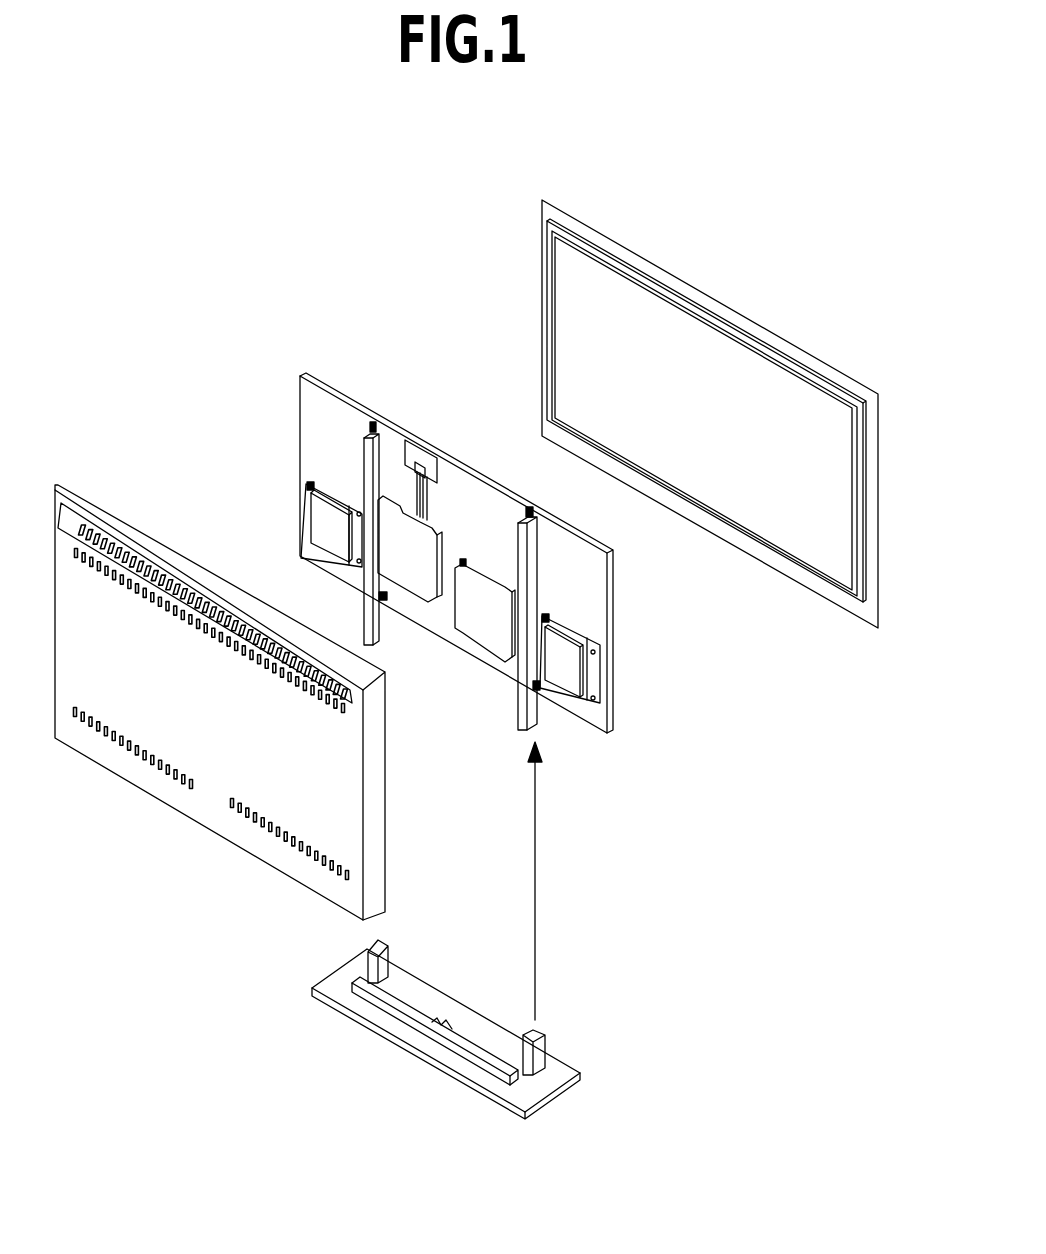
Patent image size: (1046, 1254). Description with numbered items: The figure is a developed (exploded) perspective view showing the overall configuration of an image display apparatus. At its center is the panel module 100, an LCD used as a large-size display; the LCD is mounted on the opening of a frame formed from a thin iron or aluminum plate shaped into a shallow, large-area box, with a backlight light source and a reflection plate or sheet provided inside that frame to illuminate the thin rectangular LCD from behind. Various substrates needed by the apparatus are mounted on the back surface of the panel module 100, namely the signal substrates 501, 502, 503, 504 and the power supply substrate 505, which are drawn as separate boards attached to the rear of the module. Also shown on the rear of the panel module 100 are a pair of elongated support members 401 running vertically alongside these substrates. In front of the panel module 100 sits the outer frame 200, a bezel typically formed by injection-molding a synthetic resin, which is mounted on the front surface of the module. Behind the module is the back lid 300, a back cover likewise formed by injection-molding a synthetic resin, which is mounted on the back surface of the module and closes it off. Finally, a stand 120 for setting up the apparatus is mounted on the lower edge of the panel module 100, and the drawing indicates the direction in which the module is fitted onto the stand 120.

The panel module 100 is at (587, 616).
The stand 120 is at (367, 1027).
The outer frame 200 is at (822, 598).
The back lid 300 is at (153, 777).
The support bar 401 is at (366, 462).
The signal substrate 501 is at (415, 452).
The signal substrate 502 is at (326, 522).
The signal substrate 503 is at (563, 677).
The signal substrate 504 is at (412, 573).
The power supply substrate 505 is at (485, 630).